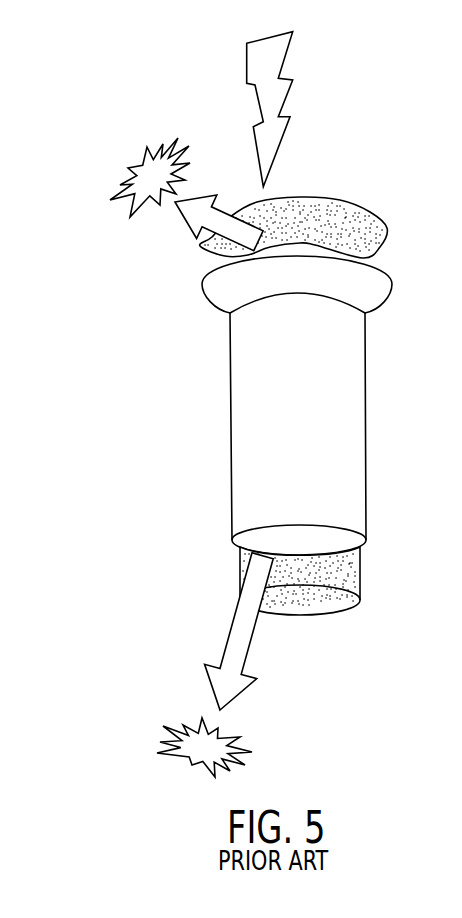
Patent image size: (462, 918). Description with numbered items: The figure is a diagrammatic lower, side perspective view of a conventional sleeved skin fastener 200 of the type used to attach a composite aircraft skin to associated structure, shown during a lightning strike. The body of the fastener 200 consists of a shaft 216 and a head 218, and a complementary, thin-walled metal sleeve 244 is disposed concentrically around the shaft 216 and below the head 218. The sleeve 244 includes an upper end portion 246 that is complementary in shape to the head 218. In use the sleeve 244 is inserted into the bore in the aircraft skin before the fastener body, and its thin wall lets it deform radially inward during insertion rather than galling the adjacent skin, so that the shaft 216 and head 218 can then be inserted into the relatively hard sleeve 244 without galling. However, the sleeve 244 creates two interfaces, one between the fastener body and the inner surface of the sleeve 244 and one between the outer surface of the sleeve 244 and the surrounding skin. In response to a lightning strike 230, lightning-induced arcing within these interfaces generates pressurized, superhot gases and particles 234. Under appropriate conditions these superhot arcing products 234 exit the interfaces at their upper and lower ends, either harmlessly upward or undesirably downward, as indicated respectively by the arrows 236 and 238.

The fastener 200 is at (319, 323).
The shaft 216 is at (338, 580).
The head 218 is at (357, 217).
The lightning strike 230 is at (247, 60).
The superhot arcing products 234 is at (163, 146).
The arrow indicating upward exit 236 is at (194, 240).
The arrow indicating downward exit 238 is at (227, 633).
The sleeve 244 is at (345, 403).
The upper end portion 246 is at (373, 282).